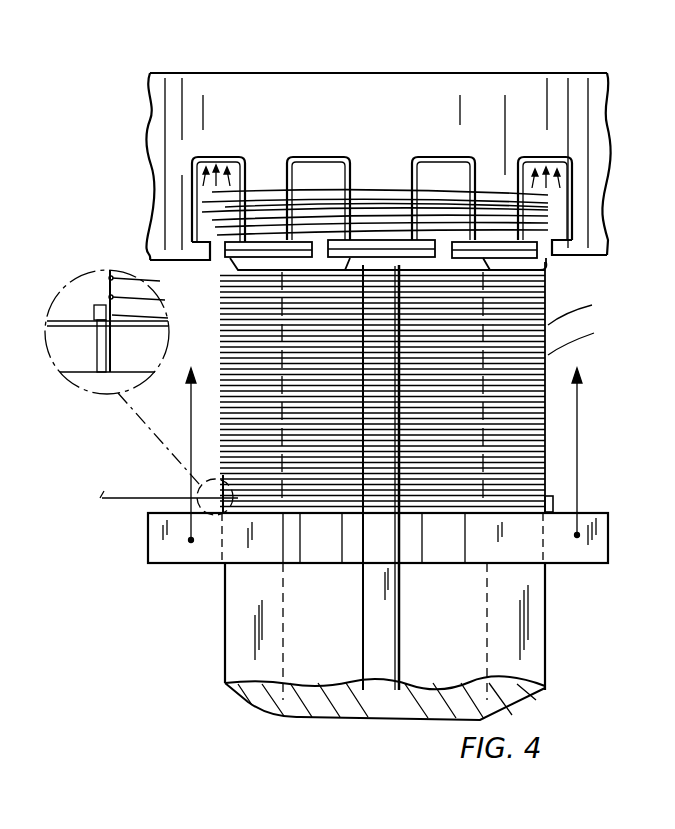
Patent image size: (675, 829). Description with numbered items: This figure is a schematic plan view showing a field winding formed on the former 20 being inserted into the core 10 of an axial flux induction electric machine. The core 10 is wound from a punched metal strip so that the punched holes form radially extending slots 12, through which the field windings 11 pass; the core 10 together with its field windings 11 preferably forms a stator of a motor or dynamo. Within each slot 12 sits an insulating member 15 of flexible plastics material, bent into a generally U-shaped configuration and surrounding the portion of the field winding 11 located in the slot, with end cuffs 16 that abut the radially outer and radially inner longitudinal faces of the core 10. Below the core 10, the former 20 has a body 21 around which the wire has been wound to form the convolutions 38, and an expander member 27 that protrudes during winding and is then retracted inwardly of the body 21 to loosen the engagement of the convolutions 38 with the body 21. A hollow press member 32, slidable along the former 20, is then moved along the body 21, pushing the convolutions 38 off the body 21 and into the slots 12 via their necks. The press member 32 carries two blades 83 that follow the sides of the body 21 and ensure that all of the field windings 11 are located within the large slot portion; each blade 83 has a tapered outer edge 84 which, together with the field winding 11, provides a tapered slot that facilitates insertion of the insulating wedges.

The core 10 is at (148, 123).
The field windings 11 is at (377, 192).
The slots 12 is at (222, 162).
The insulating member 15 is at (313, 163).
The end cuffs 16 is at (468, 158).
The former 20 is at (552, 641).
The body 21 is at (385, 631).
The expander member 27 is at (390, 628).
The press member 32 is at (598, 543).
The convolutions 38 is at (141, 300).
The blades 83 is at (105, 355).
The tapered outer edge 84 is at (99, 305).